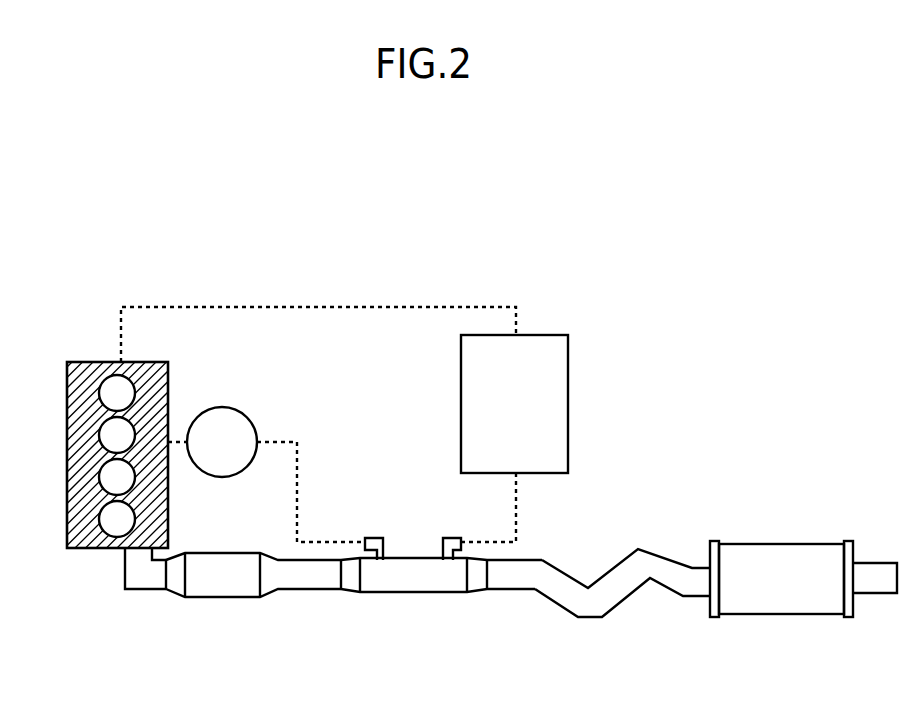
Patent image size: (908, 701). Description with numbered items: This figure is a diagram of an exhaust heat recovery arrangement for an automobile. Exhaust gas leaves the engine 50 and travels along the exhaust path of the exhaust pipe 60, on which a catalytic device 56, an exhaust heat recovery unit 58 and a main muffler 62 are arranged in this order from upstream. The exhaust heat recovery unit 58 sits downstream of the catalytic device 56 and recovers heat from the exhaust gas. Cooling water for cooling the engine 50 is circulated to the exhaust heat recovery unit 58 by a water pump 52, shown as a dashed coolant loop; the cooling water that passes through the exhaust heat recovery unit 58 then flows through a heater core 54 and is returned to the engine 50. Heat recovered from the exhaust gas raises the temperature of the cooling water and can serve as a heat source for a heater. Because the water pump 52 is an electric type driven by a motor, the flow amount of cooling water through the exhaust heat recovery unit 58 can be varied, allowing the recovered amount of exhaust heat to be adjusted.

The engine 50 is at (89, 552).
The water pump 52 is at (233, 408).
The heater core 54 is at (568, 406).
The catalytic device 56 is at (213, 597).
The exhaust heat recovery unit 58 is at (418, 541).
The exhaust pipe 60 is at (558, 618).
The main muffler 62 is at (757, 541).